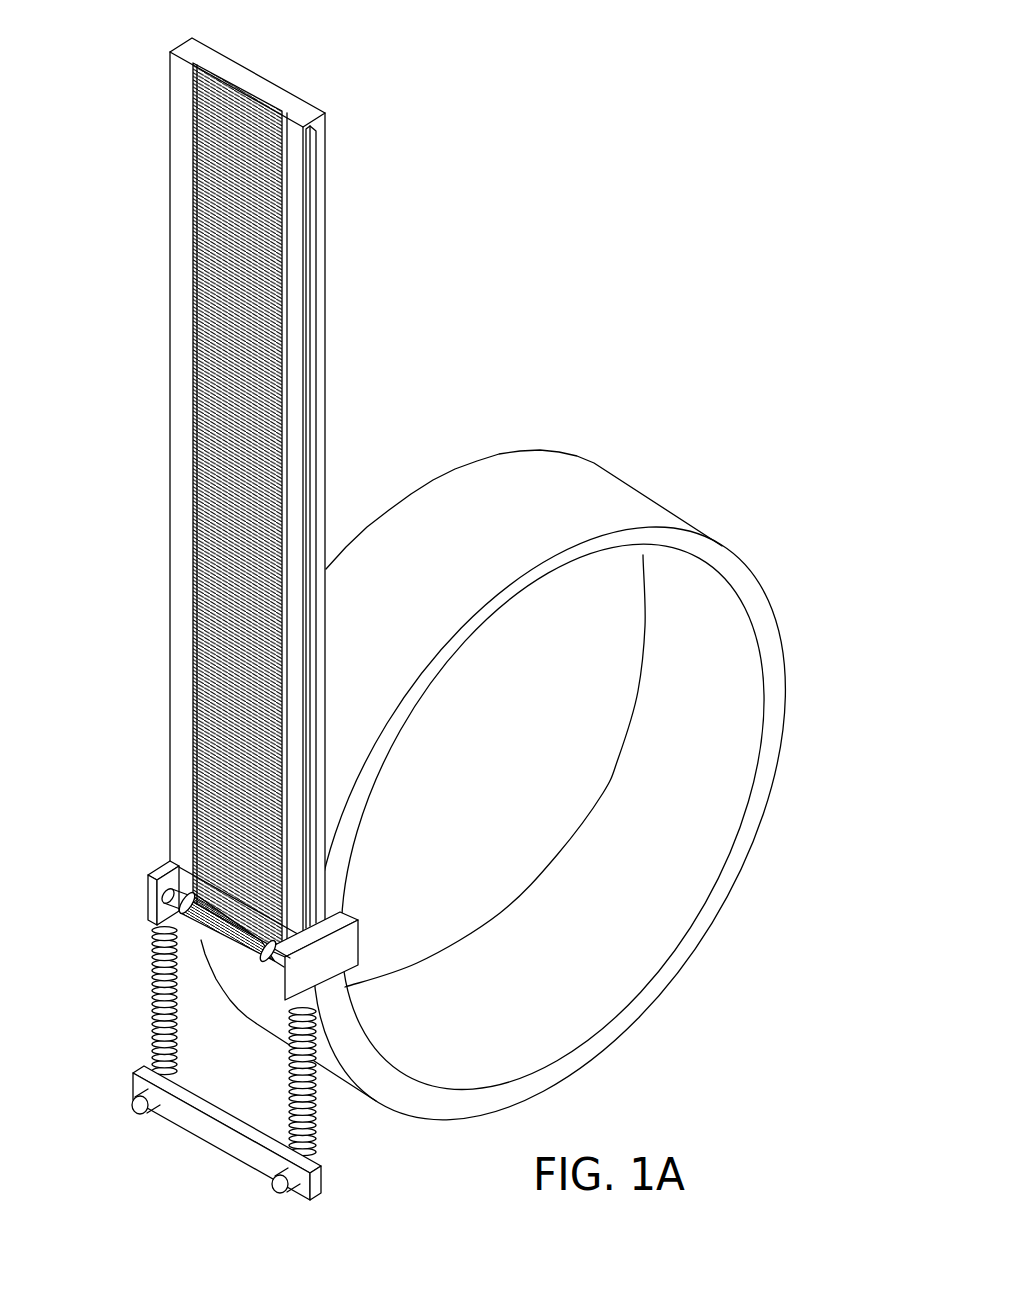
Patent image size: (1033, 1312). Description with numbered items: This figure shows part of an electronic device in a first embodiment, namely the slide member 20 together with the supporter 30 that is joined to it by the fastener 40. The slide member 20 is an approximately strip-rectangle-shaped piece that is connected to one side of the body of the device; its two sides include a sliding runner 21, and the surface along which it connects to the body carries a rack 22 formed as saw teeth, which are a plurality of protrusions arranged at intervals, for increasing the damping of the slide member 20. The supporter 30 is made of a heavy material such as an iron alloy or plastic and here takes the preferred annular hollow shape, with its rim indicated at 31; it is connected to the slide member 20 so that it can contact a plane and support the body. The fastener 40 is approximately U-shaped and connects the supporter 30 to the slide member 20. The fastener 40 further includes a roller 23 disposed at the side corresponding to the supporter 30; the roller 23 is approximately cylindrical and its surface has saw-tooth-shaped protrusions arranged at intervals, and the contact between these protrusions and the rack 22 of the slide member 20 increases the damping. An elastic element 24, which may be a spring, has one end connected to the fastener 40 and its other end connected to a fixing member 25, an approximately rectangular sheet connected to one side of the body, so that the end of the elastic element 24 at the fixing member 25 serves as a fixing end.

The slide member 20 is at (252, 484).
The sliding runner 21 is at (312, 178).
The rack 22 is at (195, 279).
The roller 23 is at (208, 892).
The elastic element 24 is at (290, 1062).
The fixing member 25 is at (207, 1130).
The supporter 30 is at (487, 487).
The ring rim 31 is at (693, 955).
The fastener 40 is at (337, 947).